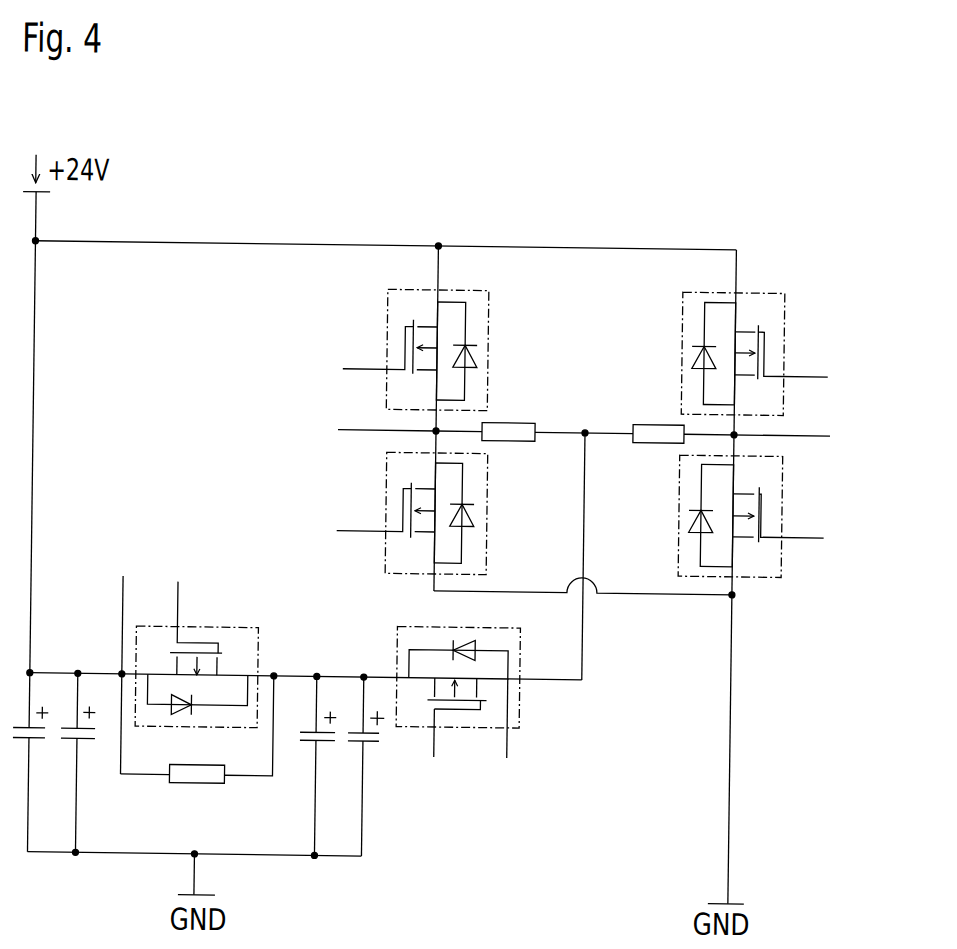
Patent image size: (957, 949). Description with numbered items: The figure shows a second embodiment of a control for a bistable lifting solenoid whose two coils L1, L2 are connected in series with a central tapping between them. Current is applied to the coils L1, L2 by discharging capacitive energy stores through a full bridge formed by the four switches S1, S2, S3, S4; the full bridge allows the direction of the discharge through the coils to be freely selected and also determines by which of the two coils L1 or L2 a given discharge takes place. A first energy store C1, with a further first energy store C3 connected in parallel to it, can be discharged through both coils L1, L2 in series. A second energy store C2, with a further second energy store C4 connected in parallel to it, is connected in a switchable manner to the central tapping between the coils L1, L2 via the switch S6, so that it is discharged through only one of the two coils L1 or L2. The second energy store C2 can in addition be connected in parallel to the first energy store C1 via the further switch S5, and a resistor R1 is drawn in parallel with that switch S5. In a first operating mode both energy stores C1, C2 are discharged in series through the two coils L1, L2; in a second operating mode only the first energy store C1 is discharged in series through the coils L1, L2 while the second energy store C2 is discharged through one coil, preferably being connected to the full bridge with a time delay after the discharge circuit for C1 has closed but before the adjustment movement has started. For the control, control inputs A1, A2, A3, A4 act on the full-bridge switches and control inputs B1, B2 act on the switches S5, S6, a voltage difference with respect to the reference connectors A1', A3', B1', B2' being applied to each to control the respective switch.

The switch S1 is at (435, 338).
The switch S2 is at (755, 354).
The switch S3 is at (431, 511).
The switch S4 is at (751, 516).
The further switch S5 is at (197, 658).
The switch S6 is at (458, 659).
The coil L1 is at (508, 453).
The coil L2 is at (658, 455).
The resistor R1 is at (197, 747).
The first energy store C1 is at (37, 762).
The second energy store C2 is at (324, 766).
The first energy store C3 is at (86, 763).
The second energy store C4 is at (372, 767).
The control input A1 is at (297, 372).
The reference connector A1' is at (351, 430).
The control input A2 is at (328, 532).
The control input A3 is at (876, 377).
The reference connector A3' is at (878, 436).
The control input A4 is at (840, 533).
The control input B1 is at (190, 581).
The reference connector B1' is at (124, 641).
The control input B2 is at (454, 756).
The reference connector B2' is at (530, 741).